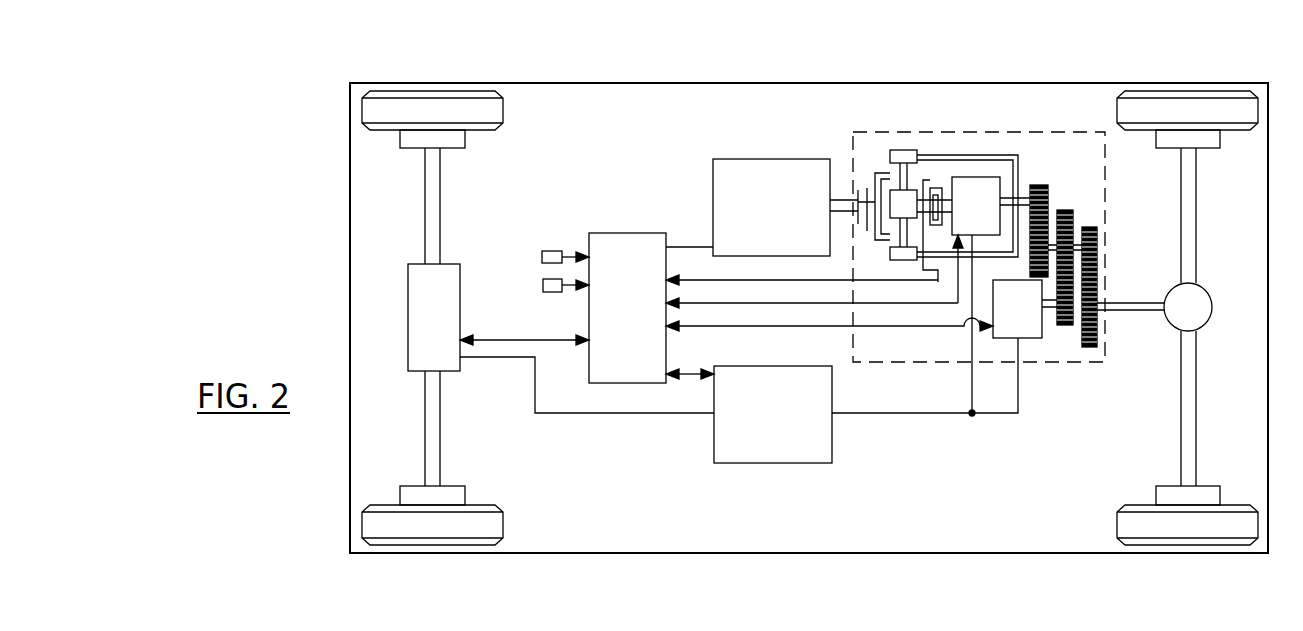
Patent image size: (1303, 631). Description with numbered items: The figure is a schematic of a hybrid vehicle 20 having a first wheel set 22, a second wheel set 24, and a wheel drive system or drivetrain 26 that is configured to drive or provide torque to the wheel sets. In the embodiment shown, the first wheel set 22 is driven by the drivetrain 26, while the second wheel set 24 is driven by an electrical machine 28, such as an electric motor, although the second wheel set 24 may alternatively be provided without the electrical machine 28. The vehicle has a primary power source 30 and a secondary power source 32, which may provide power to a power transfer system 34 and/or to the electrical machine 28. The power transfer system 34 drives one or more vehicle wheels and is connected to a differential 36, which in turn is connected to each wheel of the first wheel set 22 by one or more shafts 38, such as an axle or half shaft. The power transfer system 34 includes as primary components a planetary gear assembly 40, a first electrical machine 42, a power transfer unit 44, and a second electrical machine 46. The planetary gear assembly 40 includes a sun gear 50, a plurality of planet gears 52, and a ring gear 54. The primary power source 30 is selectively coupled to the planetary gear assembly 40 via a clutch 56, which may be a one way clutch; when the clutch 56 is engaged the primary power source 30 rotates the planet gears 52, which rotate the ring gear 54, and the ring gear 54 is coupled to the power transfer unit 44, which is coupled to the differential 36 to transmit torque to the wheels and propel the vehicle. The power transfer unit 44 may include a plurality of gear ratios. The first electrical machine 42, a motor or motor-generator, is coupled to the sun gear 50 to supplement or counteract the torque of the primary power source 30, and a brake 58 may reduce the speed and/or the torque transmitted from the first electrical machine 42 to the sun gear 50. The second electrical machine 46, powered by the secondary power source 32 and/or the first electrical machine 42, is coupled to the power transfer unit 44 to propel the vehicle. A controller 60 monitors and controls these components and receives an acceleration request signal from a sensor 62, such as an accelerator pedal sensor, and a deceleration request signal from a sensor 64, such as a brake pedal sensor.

The hybrid vehicle 20 is at (579, 70).
The first wheel set 22 is at (1193, 75).
The second wheel set 24 is at (437, 78).
The drivetrain 26 is at (717, 186).
The electrical machine 28 is at (422, 323).
The primary power source 30 is at (735, 159).
The secondary power source 32 is at (753, 463).
The power transfer system 34 is at (853, 131).
The differential 36 is at (1177, 318).
The shafts 38 is at (1197, 245).
The planetary gear assembly 40 is at (915, 138).
The first electrical machine 42 is at (965, 217).
The power transfer unit 44 is at (1068, 195).
The second electrical machine 46 is at (1006, 320).
The sun gear 50 is at (913, 214).
The planet gears 52 is at (890, 158).
The ring gear 54 is at (901, 149).
The clutch 56 is at (852, 192).
The brake 58 is at (940, 187).
The controller 60 is at (615, 313).
The sensor 62 is at (552, 251).
The sensor 64 is at (550, 293).